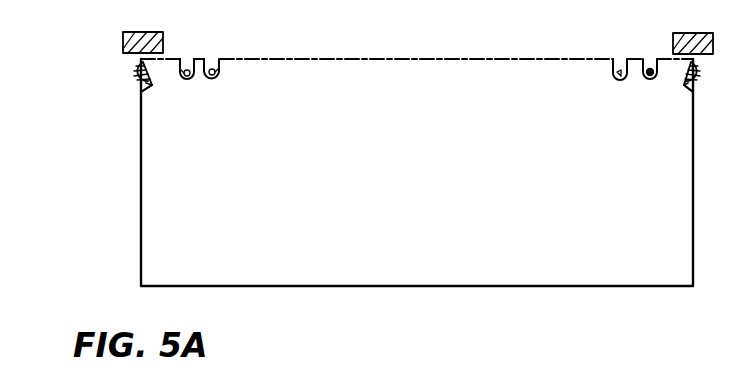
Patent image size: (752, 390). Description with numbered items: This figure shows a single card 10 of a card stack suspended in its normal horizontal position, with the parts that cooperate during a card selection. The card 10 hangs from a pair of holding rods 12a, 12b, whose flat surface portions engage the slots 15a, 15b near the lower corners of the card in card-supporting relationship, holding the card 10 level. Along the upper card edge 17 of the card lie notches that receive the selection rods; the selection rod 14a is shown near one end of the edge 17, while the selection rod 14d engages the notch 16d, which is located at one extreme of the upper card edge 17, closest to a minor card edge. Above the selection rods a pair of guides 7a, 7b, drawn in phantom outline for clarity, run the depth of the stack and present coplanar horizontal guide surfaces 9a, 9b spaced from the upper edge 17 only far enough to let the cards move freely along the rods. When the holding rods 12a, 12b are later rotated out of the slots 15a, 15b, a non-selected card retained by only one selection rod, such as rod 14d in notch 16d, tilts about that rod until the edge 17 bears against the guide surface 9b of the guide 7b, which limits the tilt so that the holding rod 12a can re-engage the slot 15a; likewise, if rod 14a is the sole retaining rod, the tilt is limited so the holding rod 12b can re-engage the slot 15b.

The card 10 is at (141, 199).
The upper card edge 17 is at (275, 60).
The guide 7a is at (148, 32).
The guide 7b is at (700, 33).
The guide surface 9a is at (131, 62).
The guide surface 9b is at (702, 68).
The holding rod 12a is at (138, 83).
The holding rod 12b is at (705, 80).
The slot 15a is at (137, 92).
The slot 15b is at (698, 95).
The selection rod 14a is at (187, 71).
The selection rod 14d is at (645, 80).
The notch 16d is at (651, 66).